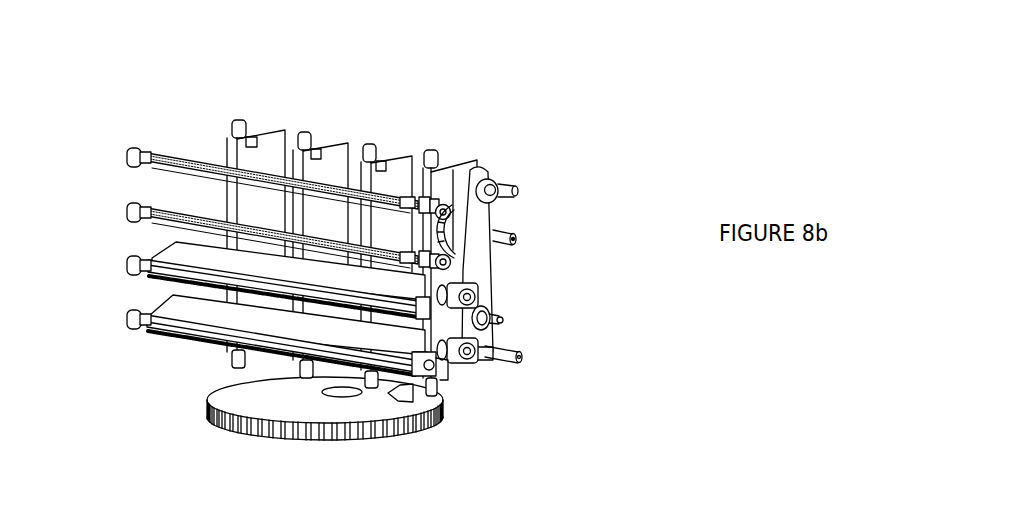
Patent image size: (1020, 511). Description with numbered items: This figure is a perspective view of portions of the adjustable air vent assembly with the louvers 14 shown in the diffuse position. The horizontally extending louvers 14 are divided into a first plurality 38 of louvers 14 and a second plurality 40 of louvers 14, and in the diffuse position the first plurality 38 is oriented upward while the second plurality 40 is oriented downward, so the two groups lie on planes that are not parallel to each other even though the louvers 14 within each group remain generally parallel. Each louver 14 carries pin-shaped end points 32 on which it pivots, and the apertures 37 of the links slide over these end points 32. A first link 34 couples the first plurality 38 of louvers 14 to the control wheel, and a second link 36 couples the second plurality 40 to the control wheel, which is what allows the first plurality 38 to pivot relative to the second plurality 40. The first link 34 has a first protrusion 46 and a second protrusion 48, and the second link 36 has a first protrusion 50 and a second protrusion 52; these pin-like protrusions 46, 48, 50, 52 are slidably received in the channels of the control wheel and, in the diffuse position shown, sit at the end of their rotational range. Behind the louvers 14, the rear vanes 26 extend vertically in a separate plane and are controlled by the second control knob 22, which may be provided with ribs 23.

The louvers 14 is at (128, 237).
The second control knob 22 is at (325, 443).
The ribs 23 is at (397, 477).
The rear vanes 26 is at (370, 112).
The end points 32 is at (480, 433).
The first link 34 is at (500, 123).
The second link 36 is at (536, 275).
The apertures 37 is at (627, 287).
The first plurality of louvers 38 is at (247, 162).
The second plurality of louvers 40 is at (127, 344).
The first protrusion of the first link 46 is at (557, 216).
The second protrusion of the first link 48 is at (550, 388).
The first protrusion of the second link 50 is at (534, 176).
The second protrusion of the second link 52 is at (553, 332).